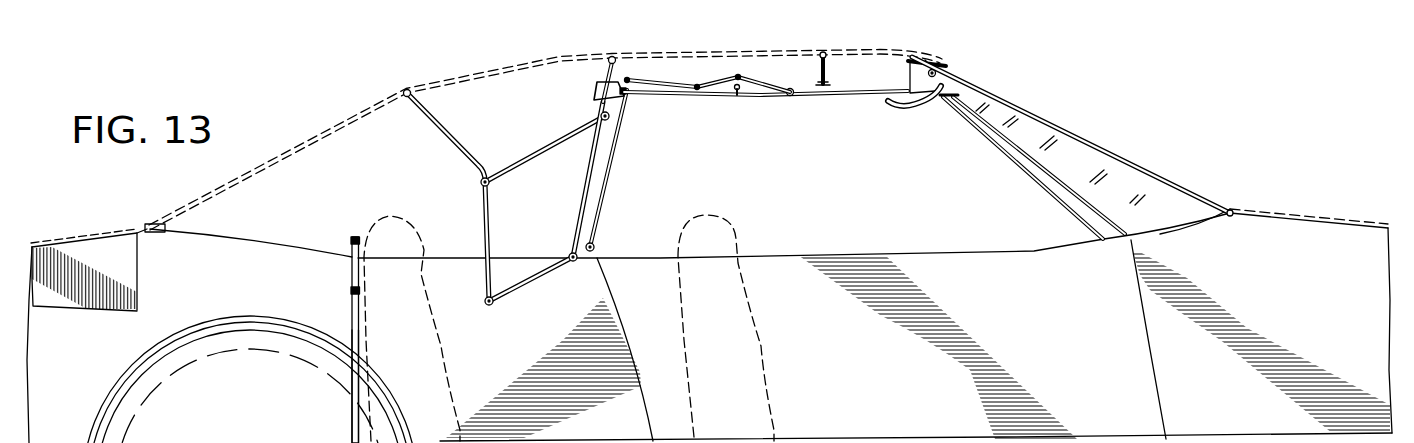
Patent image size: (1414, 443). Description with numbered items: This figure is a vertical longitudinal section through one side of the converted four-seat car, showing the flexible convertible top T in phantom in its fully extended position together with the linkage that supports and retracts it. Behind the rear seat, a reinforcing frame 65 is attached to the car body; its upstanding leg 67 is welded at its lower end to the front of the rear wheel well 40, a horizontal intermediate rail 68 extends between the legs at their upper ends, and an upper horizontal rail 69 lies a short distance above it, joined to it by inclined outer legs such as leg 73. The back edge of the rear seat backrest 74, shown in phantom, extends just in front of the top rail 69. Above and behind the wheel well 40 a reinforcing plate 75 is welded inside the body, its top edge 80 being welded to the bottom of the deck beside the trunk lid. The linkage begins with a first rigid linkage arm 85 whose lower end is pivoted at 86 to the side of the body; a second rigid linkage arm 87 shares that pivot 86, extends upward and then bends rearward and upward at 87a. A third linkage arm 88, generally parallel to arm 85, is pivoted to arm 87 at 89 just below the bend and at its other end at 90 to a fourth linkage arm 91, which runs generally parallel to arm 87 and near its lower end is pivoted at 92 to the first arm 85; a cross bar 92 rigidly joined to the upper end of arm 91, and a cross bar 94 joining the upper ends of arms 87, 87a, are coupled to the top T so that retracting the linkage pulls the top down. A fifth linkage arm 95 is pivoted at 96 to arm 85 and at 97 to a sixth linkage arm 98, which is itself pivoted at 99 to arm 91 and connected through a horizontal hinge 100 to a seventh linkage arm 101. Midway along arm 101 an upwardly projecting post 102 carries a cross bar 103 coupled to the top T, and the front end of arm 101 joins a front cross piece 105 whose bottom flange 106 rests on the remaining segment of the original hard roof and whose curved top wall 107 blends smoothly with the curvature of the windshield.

The flexible convertible top T is at (710, 52).
The rear wheel well 40 is at (246, 394).
The reinforcing frame 65 is at (322, 317).
The upstanding leg 67 is at (352, 410).
The horizontal intermediate rail 68 is at (352, 291).
The upper horizontal rail 69 is at (357, 236).
The outer leg 73 is at (352, 269).
The rear seat backrest 74 is at (423, 240).
The reinforcing plate 75 is at (123, 267).
The top edge of reinforcing plate 80 is at (73, 237).
The first rigid linkage arm 85 is at (535, 284).
The pivot 86 is at (490, 306).
The second rigid linkage arm 87 is at (496, 208).
The bent portion of second linkage arm 87a is at (437, 127).
The third linkage arm 88 is at (557, 140).
The pivotal connection 89 is at (480, 183).
The pivotal connection 90 is at (600, 114).
The fourth linkage arm 91 is at (601, 207).
The pivot / cross bar 92 is at (613, 59).
The rigid cross bar 94 is at (407, 93).
The fifth linkage arm 95 is at (618, 153).
The pivotal connection 96 is at (578, 263).
The pivotal connection 97 is at (633, 97).
The sixth linkage arm 98 is at (689, 96).
The pivotal connection 99 is at (603, 90).
The horizontal hinge 100 is at (739, 91).
The seventh linkage arm 101 is at (842, 96).
The upwardly projecting post 102 is at (830, 73).
The cross bar 103 is at (824, 53).
The front cross piece 105 is at (922, 64).
The bottom flange 106 is at (972, 86).
The curved top wall 107 is at (953, 68).